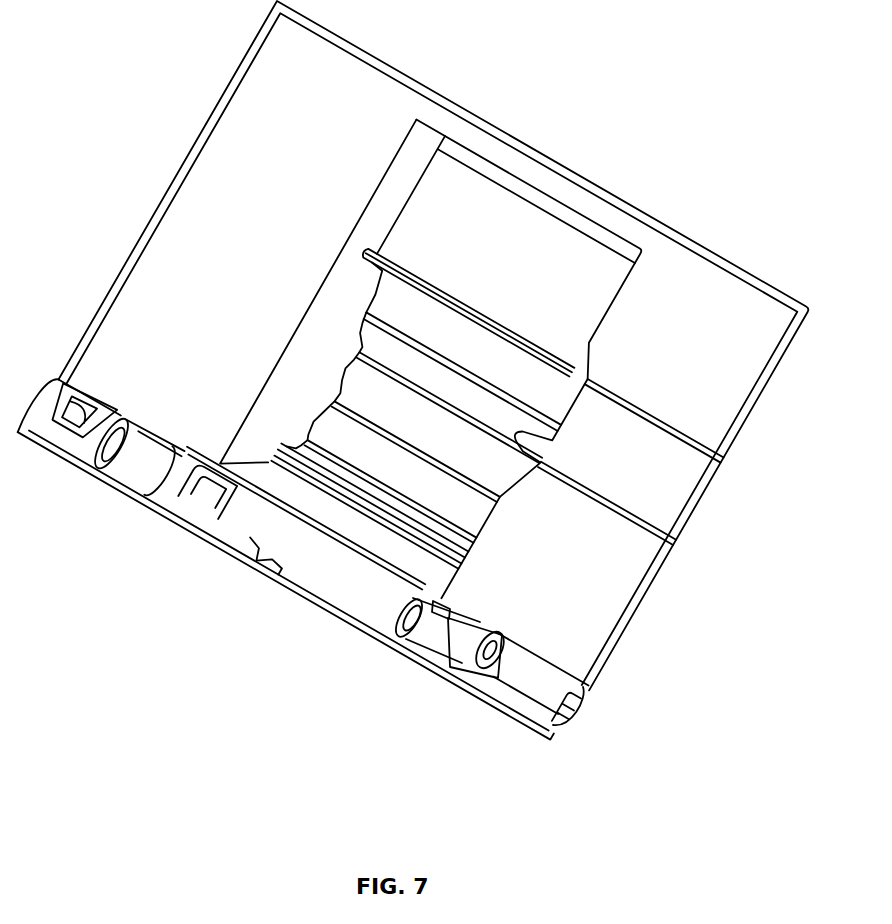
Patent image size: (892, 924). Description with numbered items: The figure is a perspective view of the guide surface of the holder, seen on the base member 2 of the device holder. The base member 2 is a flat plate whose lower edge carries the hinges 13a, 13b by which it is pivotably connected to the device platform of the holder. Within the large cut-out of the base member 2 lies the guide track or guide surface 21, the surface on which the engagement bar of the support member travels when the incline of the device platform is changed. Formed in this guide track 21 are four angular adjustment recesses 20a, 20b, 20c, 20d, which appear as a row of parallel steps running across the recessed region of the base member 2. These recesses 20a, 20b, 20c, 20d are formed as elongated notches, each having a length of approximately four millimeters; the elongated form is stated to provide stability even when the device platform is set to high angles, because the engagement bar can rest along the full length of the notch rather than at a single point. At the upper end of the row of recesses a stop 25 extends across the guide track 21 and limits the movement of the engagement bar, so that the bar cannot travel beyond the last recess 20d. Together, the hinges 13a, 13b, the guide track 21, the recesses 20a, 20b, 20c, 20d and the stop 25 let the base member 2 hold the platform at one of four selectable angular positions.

The base member 2 is at (595, 620).
The hinge 13a is at (435, 625).
The hinge 13b is at (130, 455).
The angular adjustment recess 20a is at (265, 453).
The angular adjustment recess 20b is at (490, 500).
The angular adjustment recess 20c is at (527, 448).
The angular adjustment recess 20d is at (371, 299).
The guide track 21 is at (355, 525).
The stop 25 is at (466, 302).